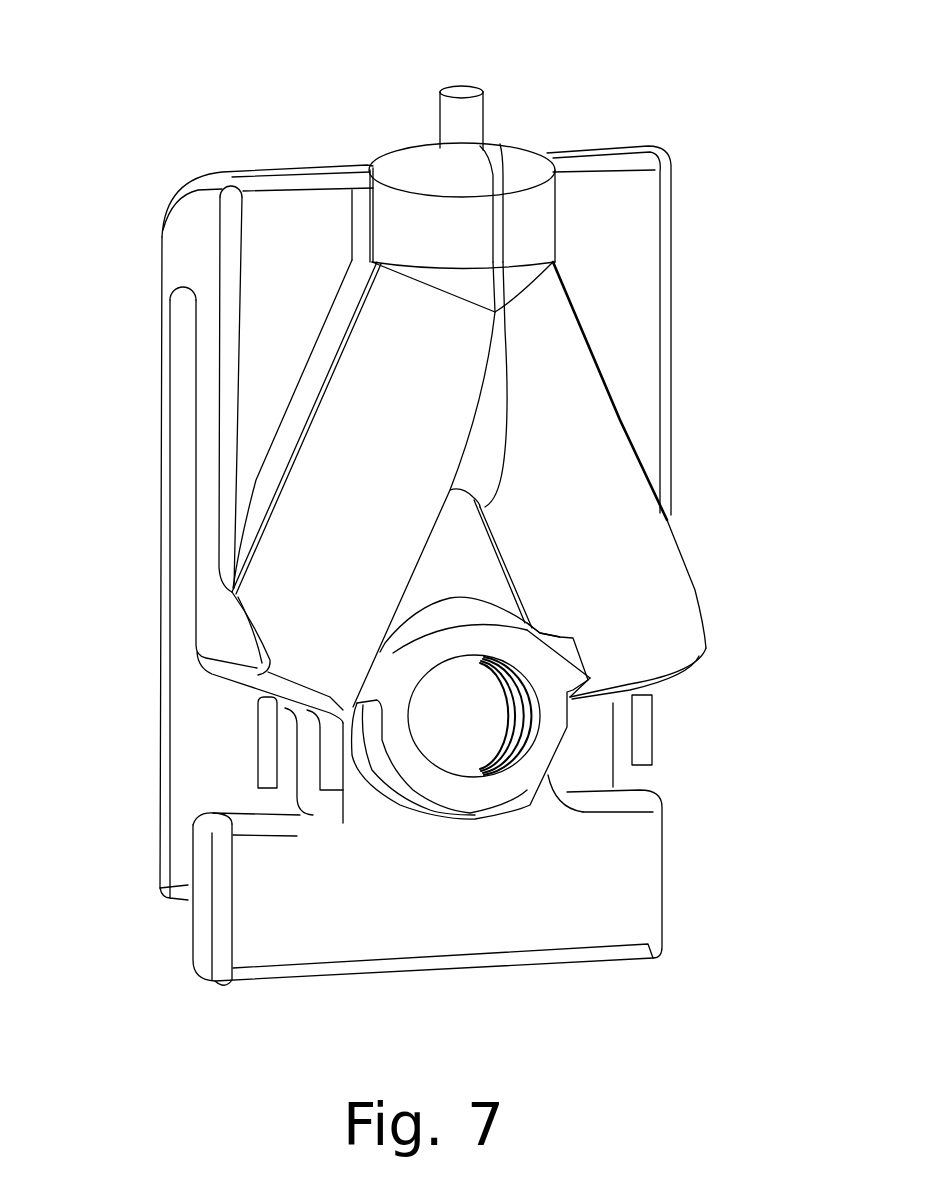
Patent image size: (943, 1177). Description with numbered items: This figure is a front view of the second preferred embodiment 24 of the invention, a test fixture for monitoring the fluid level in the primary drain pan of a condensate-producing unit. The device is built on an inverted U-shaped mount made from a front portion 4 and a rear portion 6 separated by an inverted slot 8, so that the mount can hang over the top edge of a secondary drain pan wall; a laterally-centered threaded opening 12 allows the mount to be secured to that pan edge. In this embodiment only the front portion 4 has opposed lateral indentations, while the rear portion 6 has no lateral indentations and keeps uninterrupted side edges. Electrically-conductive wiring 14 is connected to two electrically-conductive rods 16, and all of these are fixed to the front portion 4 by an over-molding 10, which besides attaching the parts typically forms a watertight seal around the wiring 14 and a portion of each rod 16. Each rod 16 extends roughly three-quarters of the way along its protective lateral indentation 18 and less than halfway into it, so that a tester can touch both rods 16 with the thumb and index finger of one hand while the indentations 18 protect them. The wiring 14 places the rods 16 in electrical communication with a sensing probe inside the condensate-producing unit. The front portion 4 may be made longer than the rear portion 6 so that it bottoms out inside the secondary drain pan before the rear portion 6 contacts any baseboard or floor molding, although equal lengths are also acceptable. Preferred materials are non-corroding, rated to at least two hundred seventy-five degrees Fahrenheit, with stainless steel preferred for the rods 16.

The second preferred embodiment 24 is at (140, 70).
The front portion 4 is at (293, 218).
The rear portion 6 is at (163, 340).
The inverted slot 8 is at (178, 437).
The over-molding 10 is at (533, 235).
The threaded opening 12 is at (493, 750).
The electrically-conductive wiring 14 is at (463, 117).
The electrically-conductive rods 16 is at (263, 725).
The protective lateral indentation 18 is at (205, 797).